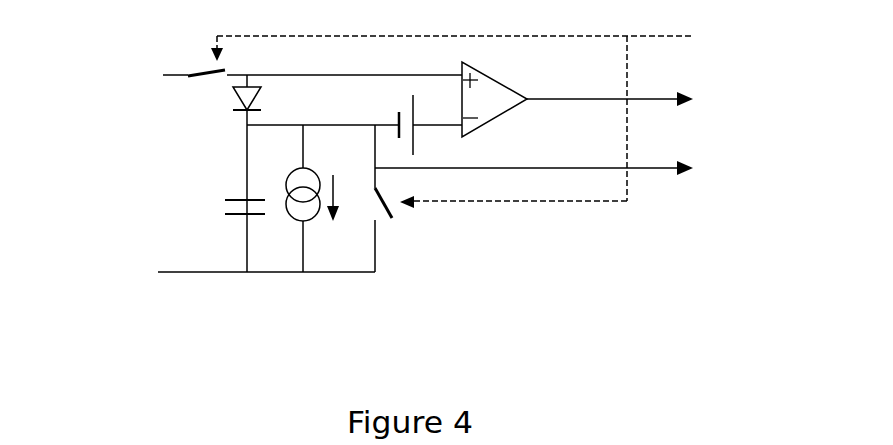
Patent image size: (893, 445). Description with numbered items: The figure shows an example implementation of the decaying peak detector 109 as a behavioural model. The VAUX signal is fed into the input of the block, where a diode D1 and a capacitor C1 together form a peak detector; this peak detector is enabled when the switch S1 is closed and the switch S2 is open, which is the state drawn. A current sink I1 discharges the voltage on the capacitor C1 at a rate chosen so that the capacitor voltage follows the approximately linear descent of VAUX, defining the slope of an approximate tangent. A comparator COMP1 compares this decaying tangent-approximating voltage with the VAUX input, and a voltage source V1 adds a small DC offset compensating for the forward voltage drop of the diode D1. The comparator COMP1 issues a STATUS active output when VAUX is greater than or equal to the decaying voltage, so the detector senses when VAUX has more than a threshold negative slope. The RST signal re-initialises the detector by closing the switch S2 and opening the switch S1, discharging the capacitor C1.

The decaying peak detector 109 is at (128, 329).
The switch S1 is at (194, 80).
The diode D1 is at (259, 98).
The capacitor C1 is at (225, 207).
The current sink I1 is at (313, 207).
The switch S2 is at (396, 213).
The voltage source V1 is at (423, 125).
The comparator COMP1 is at (510, 99).